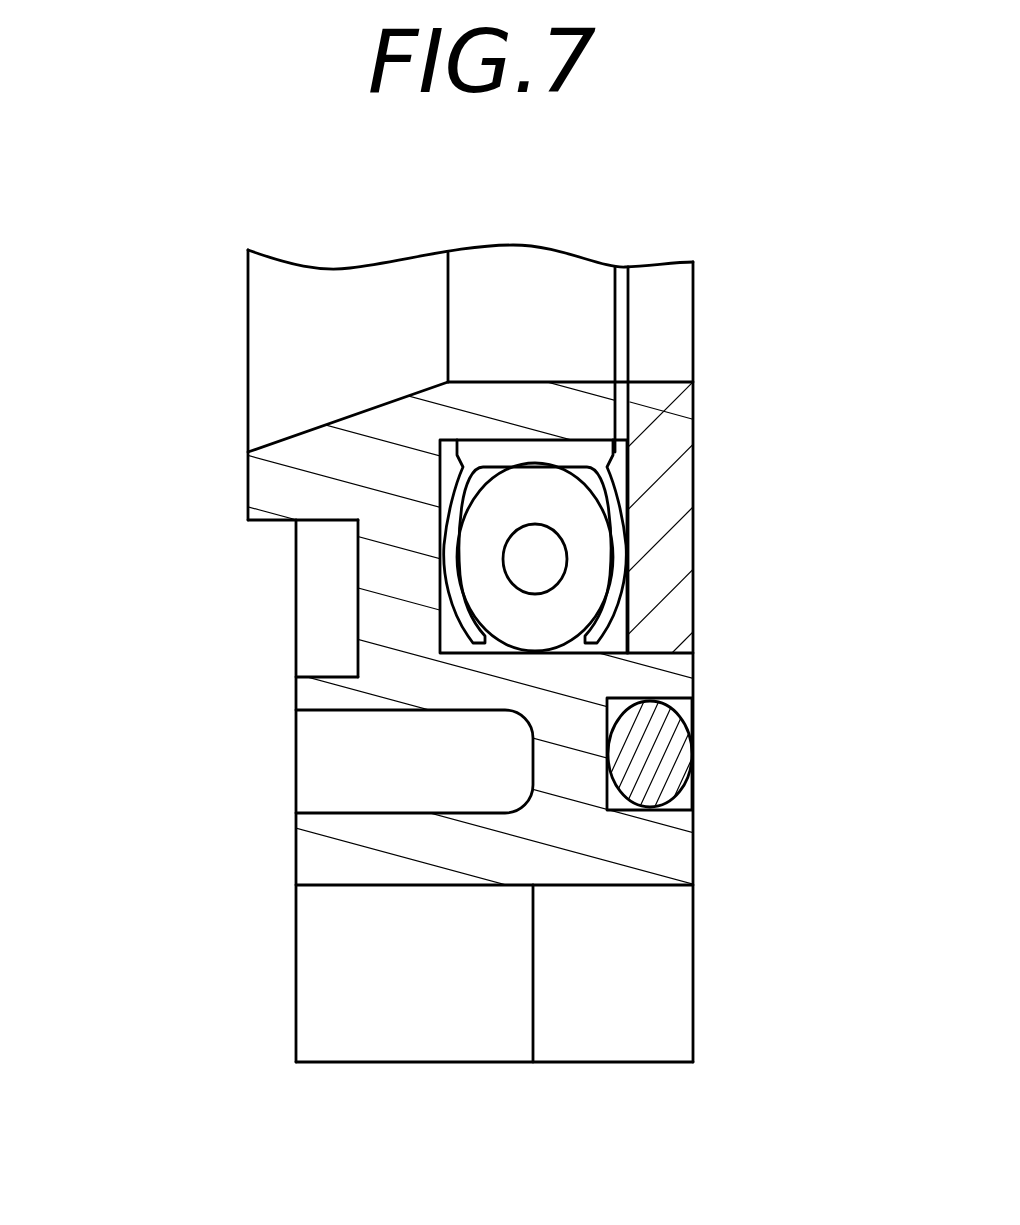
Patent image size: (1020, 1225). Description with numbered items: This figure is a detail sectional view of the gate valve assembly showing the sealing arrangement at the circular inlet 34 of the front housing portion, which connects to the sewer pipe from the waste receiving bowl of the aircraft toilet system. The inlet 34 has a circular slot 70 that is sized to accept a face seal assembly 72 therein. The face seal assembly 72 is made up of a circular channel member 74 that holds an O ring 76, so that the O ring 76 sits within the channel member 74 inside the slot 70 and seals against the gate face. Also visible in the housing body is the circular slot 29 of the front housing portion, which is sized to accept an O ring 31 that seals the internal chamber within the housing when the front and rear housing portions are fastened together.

The circular slot 29 is at (668, 812).
The O ring 31 is at (662, 757).
The circular inlet 34 is at (293, 855).
The circular slot 70 is at (622, 630).
The face seal assembly 72 is at (636, 528).
The circular channel member 74 is at (590, 454).
The O ring 76 is at (480, 572).